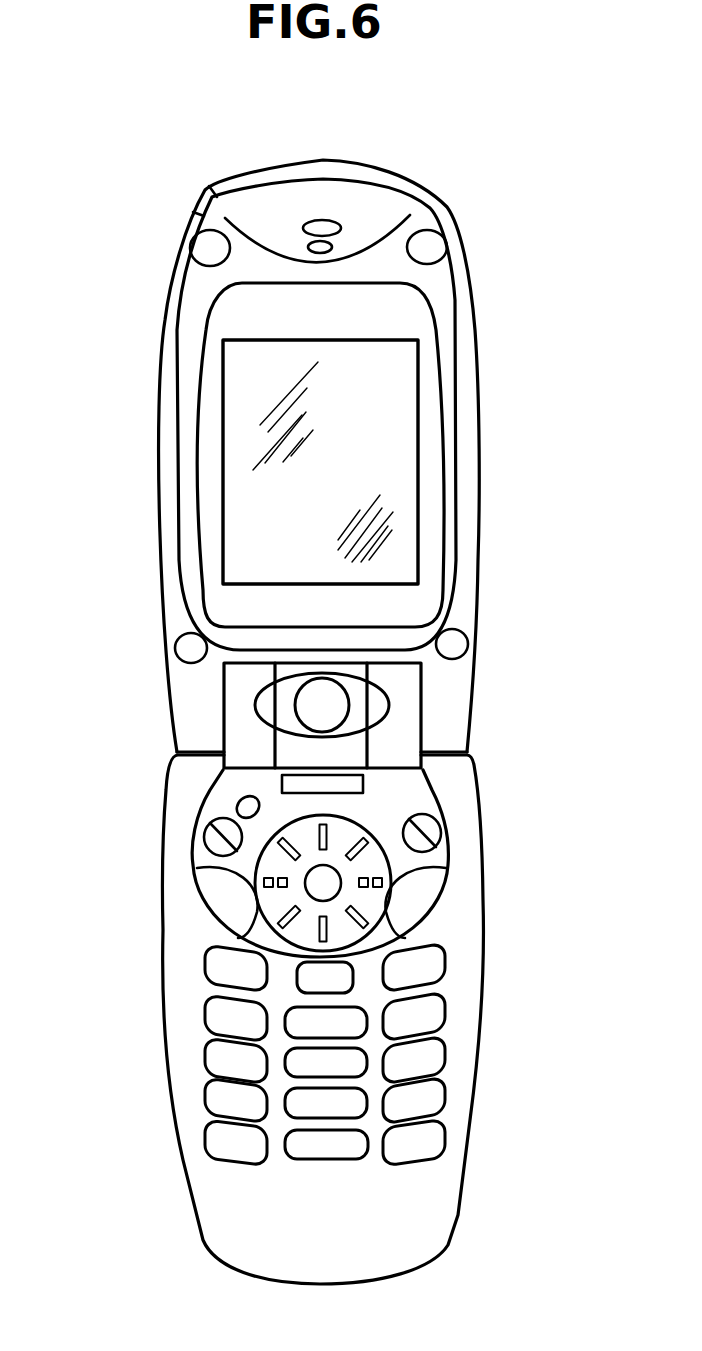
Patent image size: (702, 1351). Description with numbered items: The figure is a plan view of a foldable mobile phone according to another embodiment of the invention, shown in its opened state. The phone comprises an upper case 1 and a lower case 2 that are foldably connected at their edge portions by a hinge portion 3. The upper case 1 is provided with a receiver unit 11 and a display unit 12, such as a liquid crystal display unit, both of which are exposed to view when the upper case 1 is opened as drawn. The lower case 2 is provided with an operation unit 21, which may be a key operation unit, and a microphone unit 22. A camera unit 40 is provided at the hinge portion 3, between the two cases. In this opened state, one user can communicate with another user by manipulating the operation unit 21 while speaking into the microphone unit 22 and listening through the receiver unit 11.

The upper case 1 is at (170, 225).
The lower case 2 is at (165, 1028).
The hinge portion 3 is at (168, 682).
The receiver unit 11 is at (324, 220).
The display unit 12 is at (403, 440).
The operation unit 21 is at (427, 1007).
The microphone unit 22 is at (403, 1203).
The camera unit 40 is at (332, 707).